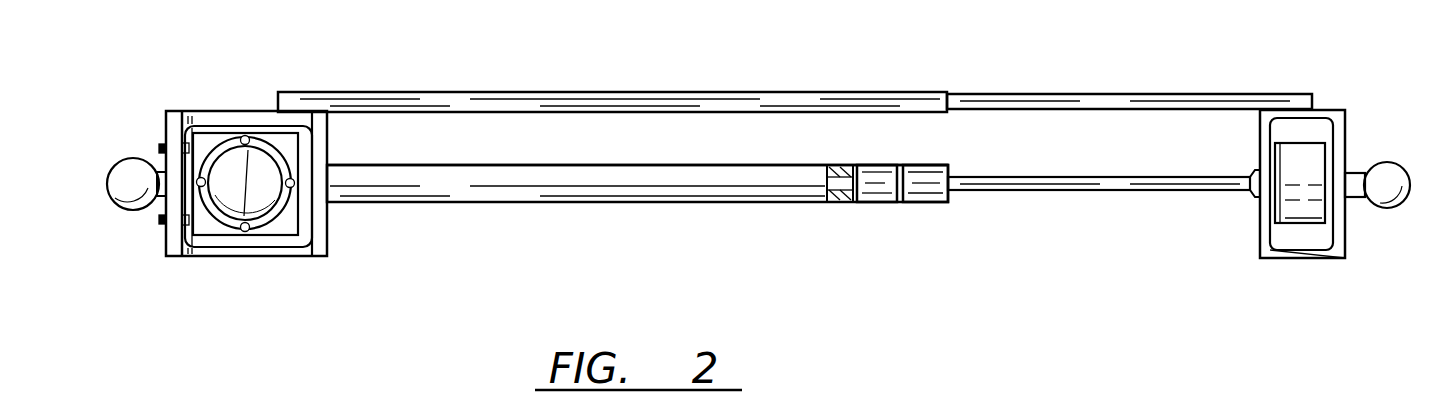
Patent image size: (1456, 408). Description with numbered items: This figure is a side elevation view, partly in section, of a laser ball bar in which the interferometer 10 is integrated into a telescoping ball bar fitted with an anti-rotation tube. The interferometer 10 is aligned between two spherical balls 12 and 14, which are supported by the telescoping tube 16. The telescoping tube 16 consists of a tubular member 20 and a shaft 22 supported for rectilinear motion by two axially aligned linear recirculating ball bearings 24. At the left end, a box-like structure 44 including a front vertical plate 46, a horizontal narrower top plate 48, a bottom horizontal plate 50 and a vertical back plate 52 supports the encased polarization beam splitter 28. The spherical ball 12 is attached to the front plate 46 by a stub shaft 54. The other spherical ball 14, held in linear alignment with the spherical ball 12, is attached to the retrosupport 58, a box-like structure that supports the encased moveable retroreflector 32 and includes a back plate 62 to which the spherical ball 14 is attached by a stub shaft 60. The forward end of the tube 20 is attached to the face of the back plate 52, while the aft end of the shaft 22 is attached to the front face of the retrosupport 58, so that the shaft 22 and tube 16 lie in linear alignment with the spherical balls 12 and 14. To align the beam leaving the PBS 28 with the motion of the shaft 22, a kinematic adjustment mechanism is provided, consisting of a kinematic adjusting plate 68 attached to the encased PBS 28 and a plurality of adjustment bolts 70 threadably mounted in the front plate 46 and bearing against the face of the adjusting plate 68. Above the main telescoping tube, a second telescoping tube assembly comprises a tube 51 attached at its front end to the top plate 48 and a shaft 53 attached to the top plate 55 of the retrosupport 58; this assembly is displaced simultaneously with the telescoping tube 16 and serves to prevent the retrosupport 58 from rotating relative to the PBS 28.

The interferometer 10 is at (1119, 248).
The spherical ball 12 is at (115, 197).
The spherical ball 14 is at (1398, 206).
The telescoping tube 16 is at (697, 208).
The tubular member 20 is at (472, 204).
The shaft 22 is at (1080, 194).
The linear recirculating ball bearings 24 is at (882, 204).
The polarization beam splitter 28 is at (284, 150).
The moveable retroreflector 32 is at (1300, 225).
The box-like structure 44 is at (206, 103).
The front vertical plate 46 is at (166, 248).
The top plate 48 is at (243, 126).
The bottom horizontal plate 50 is at (262, 250).
The tube 51 is at (725, 92).
The vertical back plate 52 is at (330, 235).
The shaft 53 is at (1055, 93).
The stub shaft 54 is at (158, 150).
The top plate 55 is at (1298, 118).
The retrosupport 58 is at (1358, 128).
The stub shaft 60 is at (1357, 172).
The back plate 62 is at (1345, 250).
The kinematic adjusting plate 68 is at (190, 252).
The adjustment bolts 70 is at (160, 147).